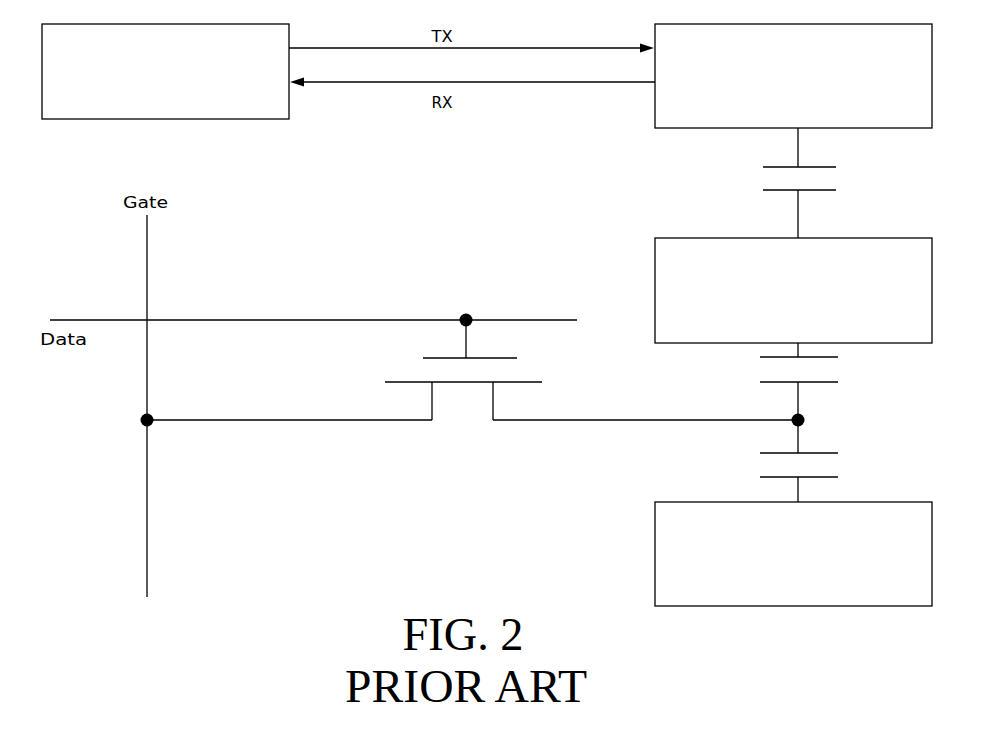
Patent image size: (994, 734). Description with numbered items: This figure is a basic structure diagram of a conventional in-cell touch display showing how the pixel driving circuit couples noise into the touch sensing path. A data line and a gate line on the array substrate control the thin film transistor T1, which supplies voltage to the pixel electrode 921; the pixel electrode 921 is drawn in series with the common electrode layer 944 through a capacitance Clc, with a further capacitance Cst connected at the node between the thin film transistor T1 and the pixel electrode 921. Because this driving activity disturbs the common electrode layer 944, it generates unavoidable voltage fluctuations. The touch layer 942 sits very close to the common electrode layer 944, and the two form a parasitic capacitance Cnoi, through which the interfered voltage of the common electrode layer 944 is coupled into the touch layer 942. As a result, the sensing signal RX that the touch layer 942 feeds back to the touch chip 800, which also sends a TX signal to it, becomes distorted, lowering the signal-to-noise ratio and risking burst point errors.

The touch chip 800 is at (147, 83).
The touch layer 942 is at (775, 85).
The common electrode layer 944 is at (775, 301).
The pixel electrode 921 is at (775, 564).
The parasitic capacitance Cnoi is at (826, 183).
The liquid crystal capacitor Clc is at (823, 381).
The storage capacitor Cst is at (823, 461).
The thin film transistor T1 is at (478, 367).